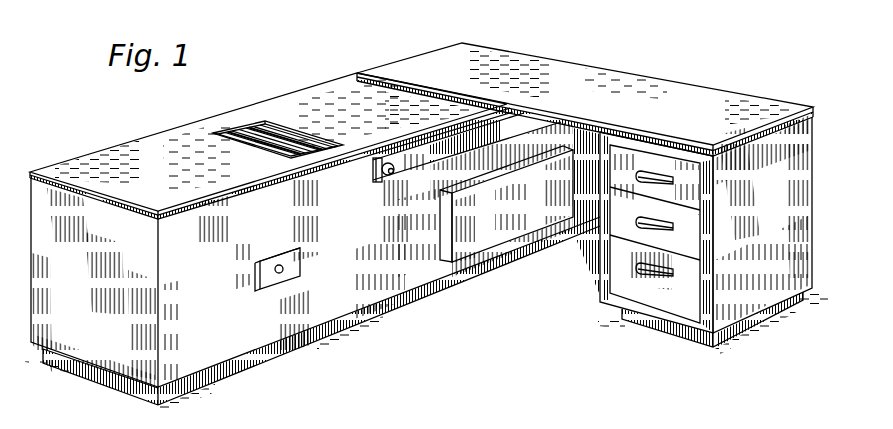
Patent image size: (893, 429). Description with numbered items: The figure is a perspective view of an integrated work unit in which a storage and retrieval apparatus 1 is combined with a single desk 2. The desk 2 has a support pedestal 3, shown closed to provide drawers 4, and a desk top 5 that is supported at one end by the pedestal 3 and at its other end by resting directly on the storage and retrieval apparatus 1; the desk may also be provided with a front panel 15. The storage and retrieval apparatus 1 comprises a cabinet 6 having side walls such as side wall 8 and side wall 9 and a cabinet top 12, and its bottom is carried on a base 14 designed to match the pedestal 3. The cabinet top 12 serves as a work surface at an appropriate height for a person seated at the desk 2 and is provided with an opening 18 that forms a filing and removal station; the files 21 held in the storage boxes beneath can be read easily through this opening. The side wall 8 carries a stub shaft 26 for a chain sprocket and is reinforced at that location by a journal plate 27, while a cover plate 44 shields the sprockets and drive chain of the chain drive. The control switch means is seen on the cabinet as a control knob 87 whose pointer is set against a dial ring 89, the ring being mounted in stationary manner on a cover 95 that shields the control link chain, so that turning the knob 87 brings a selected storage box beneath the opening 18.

The storage and retrieval apparatus 1 is at (312, 248).
The desk 2 is at (592, 200).
The support pedestal 3 is at (763, 300).
The drawers 4 is at (668, 307).
The desk top 5 is at (673, 85).
The cabinet 6 is at (271, 146).
The side wall 8 is at (244, 346).
The side wall 9 is at (85, 350).
The cabinet top 12 is at (107, 149).
The base 14 is at (425, 293).
The front panel 15 is at (600, 242).
The opening 18 is at (278, 115).
The files 21 is at (286, 148).
The stub shaft 26 is at (283, 272).
The journal plate 27 is at (284, 264).
The cover plate 44 is at (442, 210).
The control knob 87 is at (392, 176).
The dial ring 89 is at (375, 172).
The cover 95 is at (453, 157).